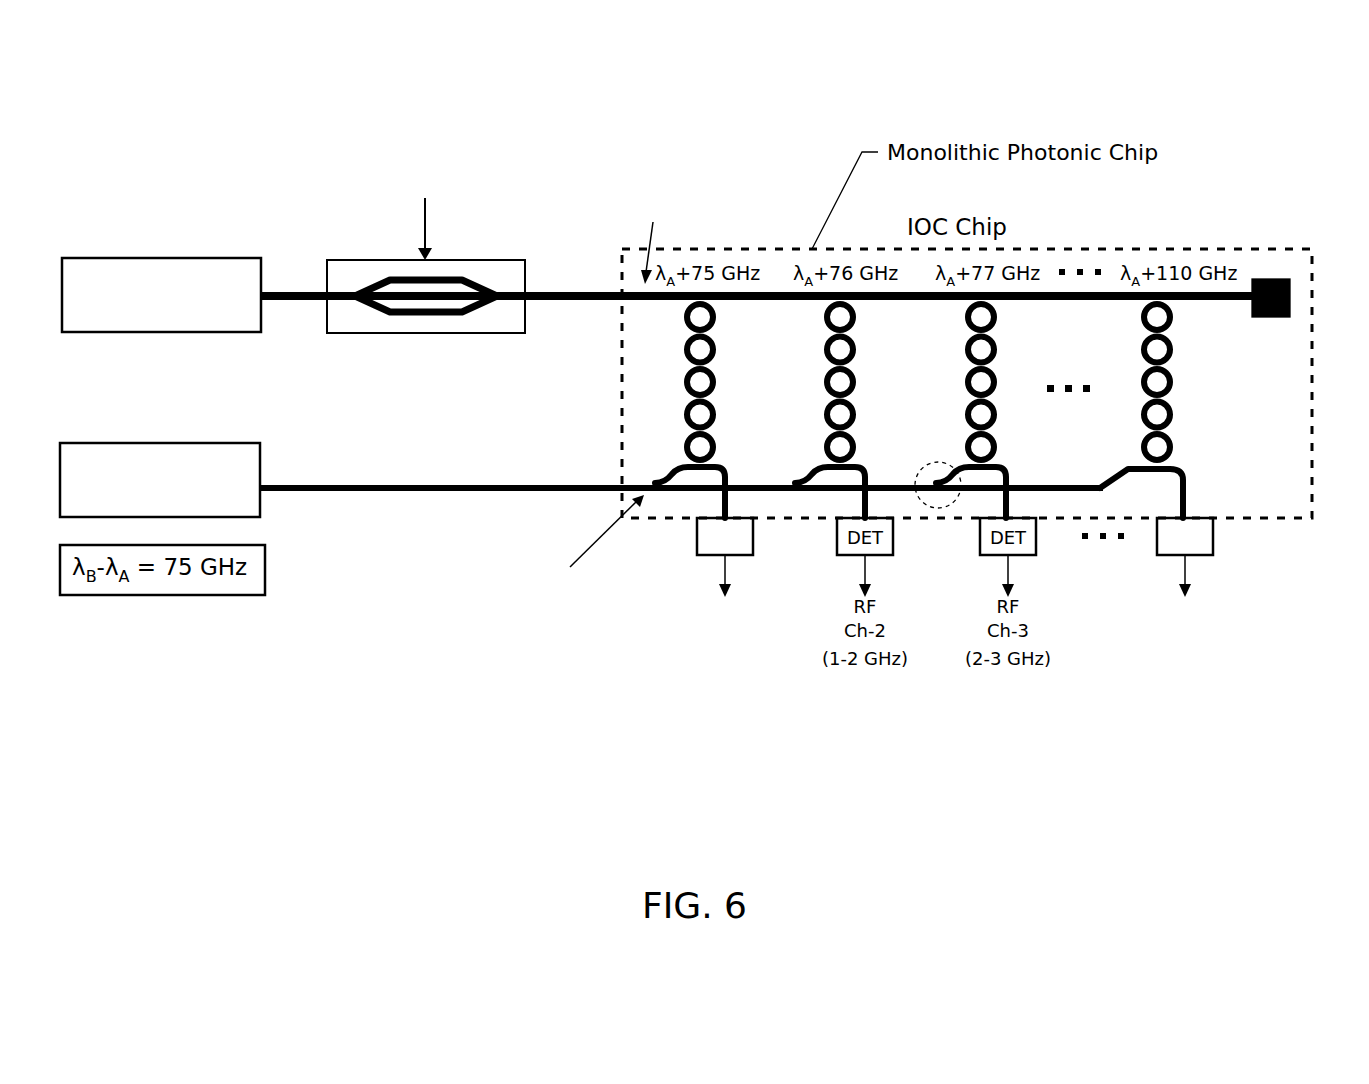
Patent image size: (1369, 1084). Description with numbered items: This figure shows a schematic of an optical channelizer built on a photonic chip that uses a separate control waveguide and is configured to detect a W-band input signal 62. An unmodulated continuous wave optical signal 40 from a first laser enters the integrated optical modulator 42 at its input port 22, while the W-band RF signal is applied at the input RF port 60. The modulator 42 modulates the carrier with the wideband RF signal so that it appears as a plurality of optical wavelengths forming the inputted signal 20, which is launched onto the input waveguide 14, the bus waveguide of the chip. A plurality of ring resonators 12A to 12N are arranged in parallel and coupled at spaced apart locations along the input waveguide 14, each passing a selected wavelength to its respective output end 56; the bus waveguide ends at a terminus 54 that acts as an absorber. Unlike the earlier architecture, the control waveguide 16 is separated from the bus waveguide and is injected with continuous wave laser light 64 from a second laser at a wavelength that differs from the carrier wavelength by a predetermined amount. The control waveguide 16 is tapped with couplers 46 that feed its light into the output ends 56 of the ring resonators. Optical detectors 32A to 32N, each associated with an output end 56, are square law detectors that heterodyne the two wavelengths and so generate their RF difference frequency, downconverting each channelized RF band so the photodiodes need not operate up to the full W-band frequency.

The continuous wave optical signal 40 is at (167, 257).
The input port 22 is at (320, 292).
The integrated optical modulator 42 is at (347, 336).
The input RF port 60 is at (431, 257).
The W-band input signal 62 is at (418, 170).
The inputted signal 20 is at (543, 290).
The input waveguide 14 is at (549, 294).
The ring resonator 12A is at (682, 318).
The ring resonator 12N is at (1172, 325).
The terminus 54 is at (1288, 281).
The output end 56 is at (822, 440).
The coupler 46 is at (942, 462).
The continuous wave laser light 64 is at (262, 443).
The control waveguide 16 is at (452, 488).
The optical detector 32A is at (696, 552).
The optical detector 32N is at (1213, 555).